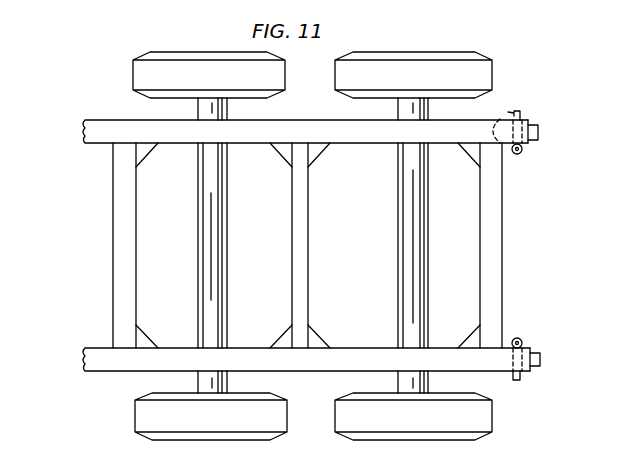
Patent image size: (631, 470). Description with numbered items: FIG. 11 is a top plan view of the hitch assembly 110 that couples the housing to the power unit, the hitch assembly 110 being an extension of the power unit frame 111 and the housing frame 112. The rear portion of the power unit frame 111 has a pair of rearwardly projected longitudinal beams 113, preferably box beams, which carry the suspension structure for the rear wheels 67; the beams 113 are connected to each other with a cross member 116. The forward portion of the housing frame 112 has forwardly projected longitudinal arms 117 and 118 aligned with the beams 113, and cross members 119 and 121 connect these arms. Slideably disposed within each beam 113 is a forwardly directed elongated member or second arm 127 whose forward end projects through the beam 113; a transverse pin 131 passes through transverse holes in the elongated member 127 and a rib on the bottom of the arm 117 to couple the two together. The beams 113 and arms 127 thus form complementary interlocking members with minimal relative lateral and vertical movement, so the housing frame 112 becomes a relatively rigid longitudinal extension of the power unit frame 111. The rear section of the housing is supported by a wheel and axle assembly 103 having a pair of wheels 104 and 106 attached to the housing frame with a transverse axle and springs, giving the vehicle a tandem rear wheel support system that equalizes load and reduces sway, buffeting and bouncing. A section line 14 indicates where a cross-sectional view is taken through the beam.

The section line 14- 14 is at (563, 338).
The rear wheels 67 is at (418, 70).
The wheel and axle assembly 103 is at (208, 268).
The wheel 104 is at (152, 72).
The wheel 106 is at (147, 415).
The hitch assembly 110 is at (545, 101).
The power unit frame 111 is at (504, 204).
The housing frame 112 is at (114, 207).
The longitudinal beams 113 is at (498, 118).
The cross member 116 is at (495, 245).
The longitudinal arm 117 is at (362, 362).
The longitudinal arm 118 is at (346, 132).
The cross member 119 is at (123, 286).
The cross member 121 is at (298, 246).
The elongated member 127 is at (540, 132).
The transverse pin 131 is at (522, 153).